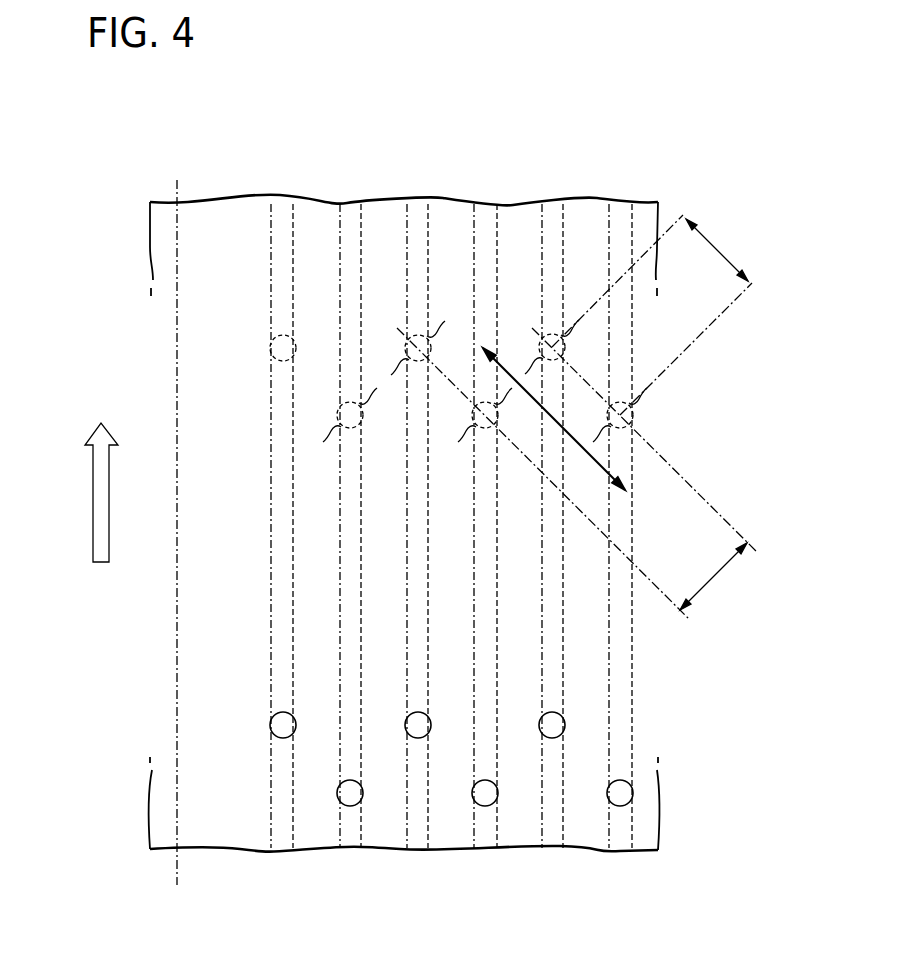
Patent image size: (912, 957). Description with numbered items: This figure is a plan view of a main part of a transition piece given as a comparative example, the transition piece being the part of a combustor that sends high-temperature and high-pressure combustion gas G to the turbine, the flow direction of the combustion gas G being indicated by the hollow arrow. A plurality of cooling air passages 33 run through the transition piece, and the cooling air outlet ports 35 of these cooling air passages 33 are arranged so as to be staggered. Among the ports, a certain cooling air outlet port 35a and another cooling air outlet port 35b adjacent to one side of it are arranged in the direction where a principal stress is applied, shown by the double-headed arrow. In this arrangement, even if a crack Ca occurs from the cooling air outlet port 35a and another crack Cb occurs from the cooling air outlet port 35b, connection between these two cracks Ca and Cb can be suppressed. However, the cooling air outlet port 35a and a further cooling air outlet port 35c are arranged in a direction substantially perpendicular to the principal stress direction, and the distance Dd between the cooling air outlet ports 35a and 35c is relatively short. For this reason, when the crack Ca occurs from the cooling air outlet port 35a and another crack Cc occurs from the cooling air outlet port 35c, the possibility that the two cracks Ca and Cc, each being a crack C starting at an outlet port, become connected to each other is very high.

The cooling air passage 33 is at (633, 740).
The cooling air outlet port 35 is at (515, 461).
The cooling air outlet port 35a is at (553, 335).
The cooling air outlet port 35b is at (637, 413).
The cooling air outlet port 35c is at (486, 428).
The crack C is at (583, 359).
The crack Ca is at (527, 373).
The crack Cb is at (598, 438).
The crack Cc is at (505, 397).
The distance Dd is at (714, 414).
The combustion gas G is at (93, 500).